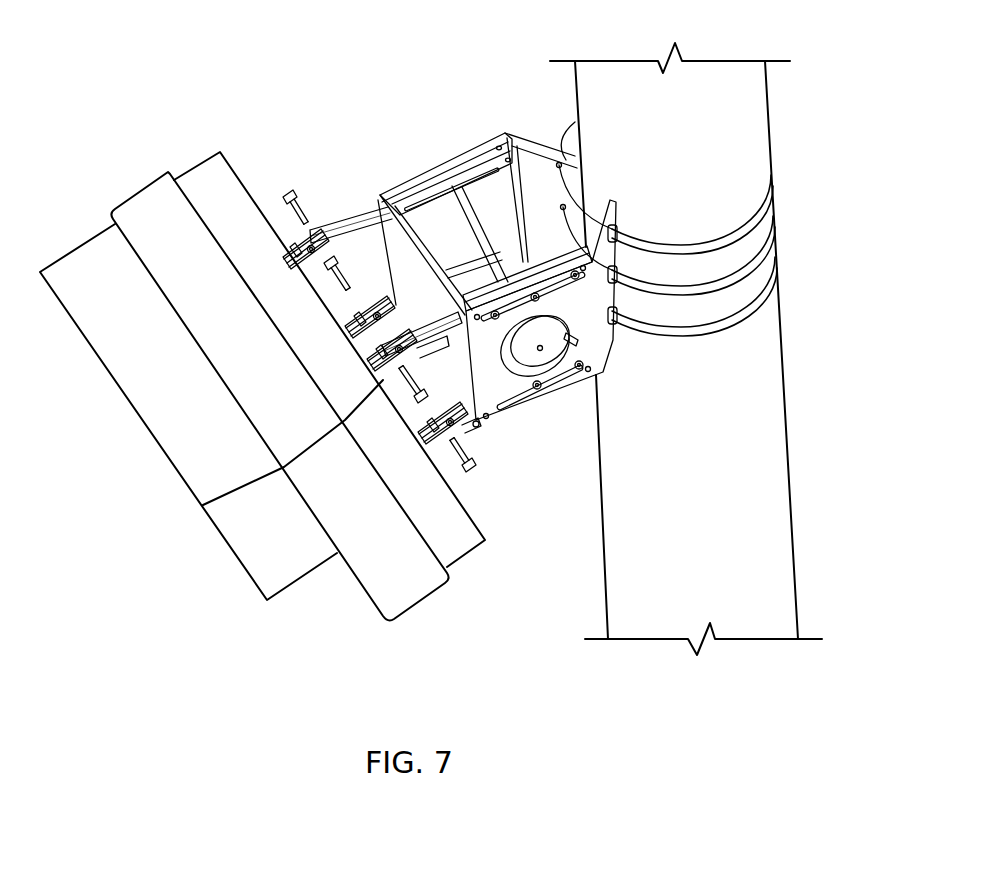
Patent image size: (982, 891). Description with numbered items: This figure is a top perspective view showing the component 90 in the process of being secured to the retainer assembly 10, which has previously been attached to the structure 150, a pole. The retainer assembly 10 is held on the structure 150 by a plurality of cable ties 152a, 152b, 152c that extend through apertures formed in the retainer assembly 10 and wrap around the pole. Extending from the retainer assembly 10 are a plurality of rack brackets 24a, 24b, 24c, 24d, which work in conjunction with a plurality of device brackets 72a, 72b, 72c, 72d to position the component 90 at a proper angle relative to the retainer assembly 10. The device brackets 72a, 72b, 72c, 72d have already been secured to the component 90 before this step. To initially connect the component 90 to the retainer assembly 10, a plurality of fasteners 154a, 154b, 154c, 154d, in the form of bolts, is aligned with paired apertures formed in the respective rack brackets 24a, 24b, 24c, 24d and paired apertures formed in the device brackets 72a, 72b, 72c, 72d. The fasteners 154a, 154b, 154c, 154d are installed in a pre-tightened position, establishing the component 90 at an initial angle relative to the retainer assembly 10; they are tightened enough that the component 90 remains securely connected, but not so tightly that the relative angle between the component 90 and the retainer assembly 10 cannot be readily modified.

The retainer assembly 10 is at (438, 45).
The rack bracket 24a is at (466, 432).
The rack bracket 24b is at (458, 348).
The rack bracket 24c is at (366, 190).
The rack bracket 24d is at (452, 326).
The device bracket 72a is at (440, 450).
The device bracket 72b is at (412, 405).
The device bracket 72c is at (318, 272).
The device bracket 72d is at (365, 346).
The component 90 is at (307, 596).
The structure 150 is at (791, 443).
The cable tie 152a is at (753, 306).
The cable tie 152b is at (750, 266).
The cable tie 152c is at (748, 226).
The fastener 154a is at (478, 462).
The fastener 154b is at (479, 423).
The fastener 154c is at (297, 201).
The fastener 154d is at (352, 275).